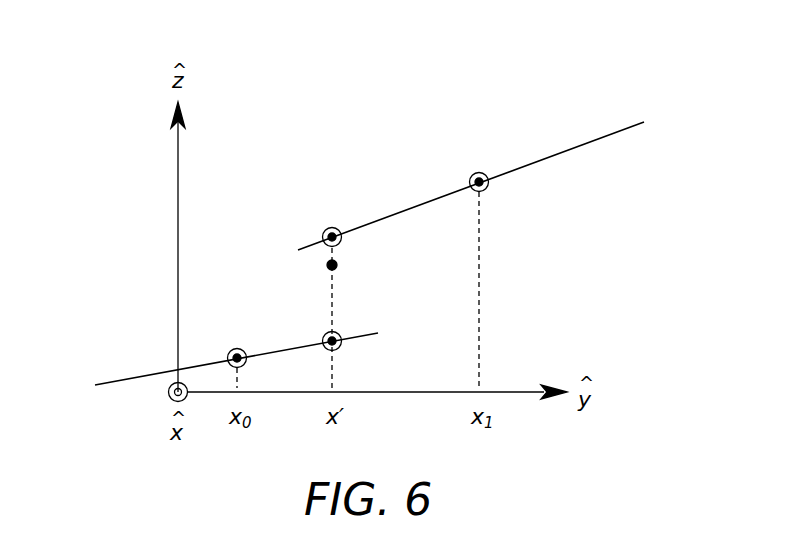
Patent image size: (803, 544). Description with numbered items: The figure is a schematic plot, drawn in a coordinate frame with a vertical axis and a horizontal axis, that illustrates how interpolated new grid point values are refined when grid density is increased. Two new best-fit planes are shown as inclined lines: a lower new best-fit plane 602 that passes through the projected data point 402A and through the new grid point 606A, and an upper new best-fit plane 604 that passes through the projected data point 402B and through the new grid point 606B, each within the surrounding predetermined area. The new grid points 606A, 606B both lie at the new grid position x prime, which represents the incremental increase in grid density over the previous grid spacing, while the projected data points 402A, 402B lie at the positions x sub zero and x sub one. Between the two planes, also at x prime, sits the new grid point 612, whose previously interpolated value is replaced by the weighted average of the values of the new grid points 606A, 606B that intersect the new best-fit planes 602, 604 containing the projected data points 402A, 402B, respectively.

The new (best-fit) plane 602 is at (128, 378).
The new (best-fit) plane 604 is at (578, 143).
The projected data point 402A is at (228, 352).
The projected data point 402B is at (471, 176).
The new grid point 606A is at (341, 349).
The new grid point 606B is at (324, 230).
The new grid point 612 is at (338, 264).